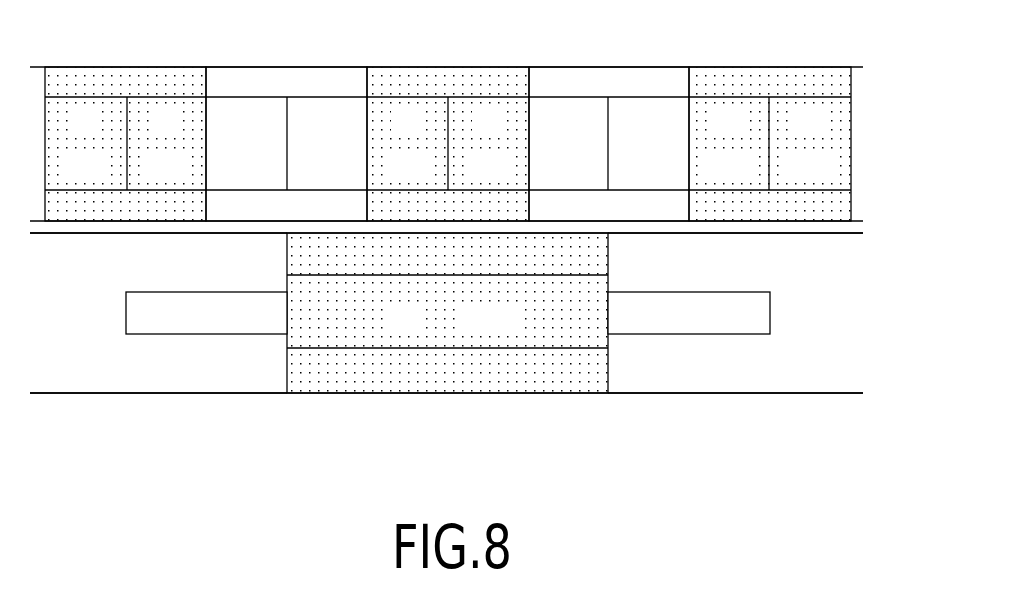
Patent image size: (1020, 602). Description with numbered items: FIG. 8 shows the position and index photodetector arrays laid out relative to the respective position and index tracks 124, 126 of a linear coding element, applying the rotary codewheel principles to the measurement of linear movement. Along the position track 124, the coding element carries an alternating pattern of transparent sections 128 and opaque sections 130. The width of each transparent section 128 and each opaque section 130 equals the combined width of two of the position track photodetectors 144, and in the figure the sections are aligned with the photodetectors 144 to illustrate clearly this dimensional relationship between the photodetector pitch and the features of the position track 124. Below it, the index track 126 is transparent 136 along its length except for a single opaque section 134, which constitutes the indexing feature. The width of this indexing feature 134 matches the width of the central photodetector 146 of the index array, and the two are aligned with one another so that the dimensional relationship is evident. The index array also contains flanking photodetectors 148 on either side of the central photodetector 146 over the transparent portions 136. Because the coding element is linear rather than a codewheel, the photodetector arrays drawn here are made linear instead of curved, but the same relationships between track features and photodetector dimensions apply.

The position track 124 is at (877, 134).
The index track 126 is at (877, 337).
The transparent section 128 is at (272, 66).
The opaque section 130 is at (112, 66).
The opaque section 134 is at (480, 404).
The transparent portion 136 is at (180, 404).
The photodetector 144 is at (448, 143).
The central photodetector 146 is at (510, 327).
The pixel cell 148 is at (267, 328).